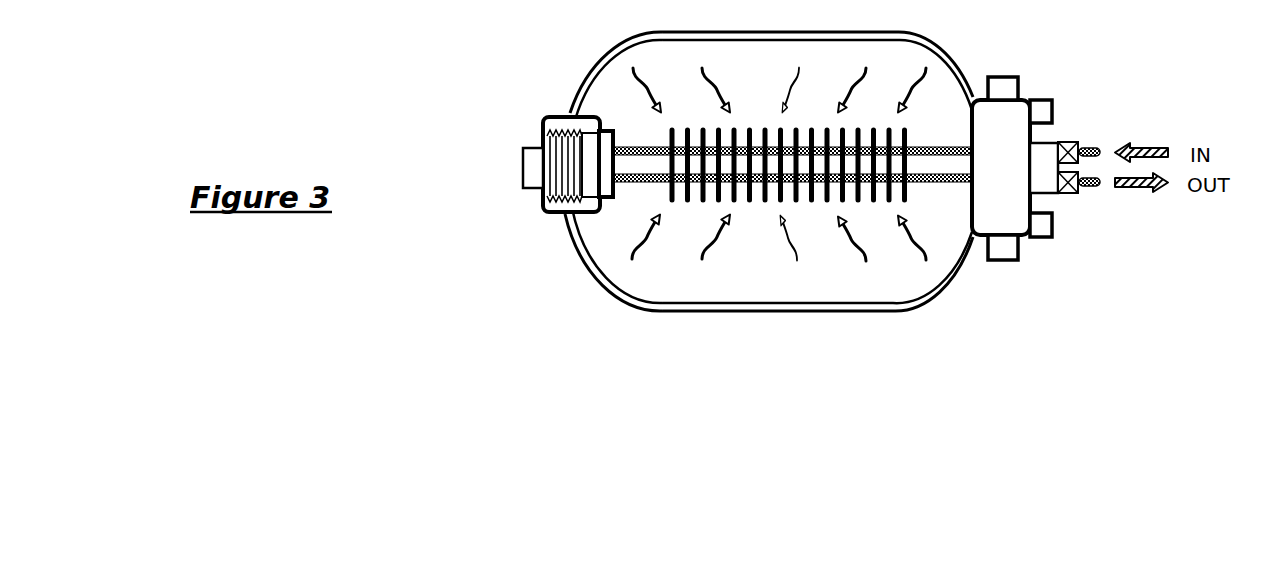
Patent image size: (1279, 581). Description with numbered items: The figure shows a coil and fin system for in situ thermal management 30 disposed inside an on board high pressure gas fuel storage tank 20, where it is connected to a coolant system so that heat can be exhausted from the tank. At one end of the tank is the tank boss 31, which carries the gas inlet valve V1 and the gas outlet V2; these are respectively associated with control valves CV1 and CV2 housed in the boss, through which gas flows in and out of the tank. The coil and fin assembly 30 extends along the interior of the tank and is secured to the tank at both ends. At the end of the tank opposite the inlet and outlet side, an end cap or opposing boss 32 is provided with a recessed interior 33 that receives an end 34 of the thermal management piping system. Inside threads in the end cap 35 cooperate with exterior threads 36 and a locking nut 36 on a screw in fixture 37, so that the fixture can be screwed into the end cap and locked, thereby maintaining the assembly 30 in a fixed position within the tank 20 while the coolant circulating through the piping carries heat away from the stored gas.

The on board tank 20 is at (658, 310).
The coil and fin system for in situ thermal management 30 is at (765, 125).
The tank boss 31 is at (1010, 130).
The end cap or opposing boss 32 is at (568, 110).
The recessed interior 33 is at (598, 117).
The end of the thermal management piping system 34 is at (617, 143).
The inside threads in the end cap 35 is at (545, 128).
The exterior threads and locking nut 36 is at (543, 167).
The screw in fixture 37 is at (543, 188).
The gas inlet valve V1 is at (1052, 110).
The gas outlet valve V2 is at (1053, 228).
The control valve CV1 is at (1078, 143).
The control valve CV2 is at (1077, 192).